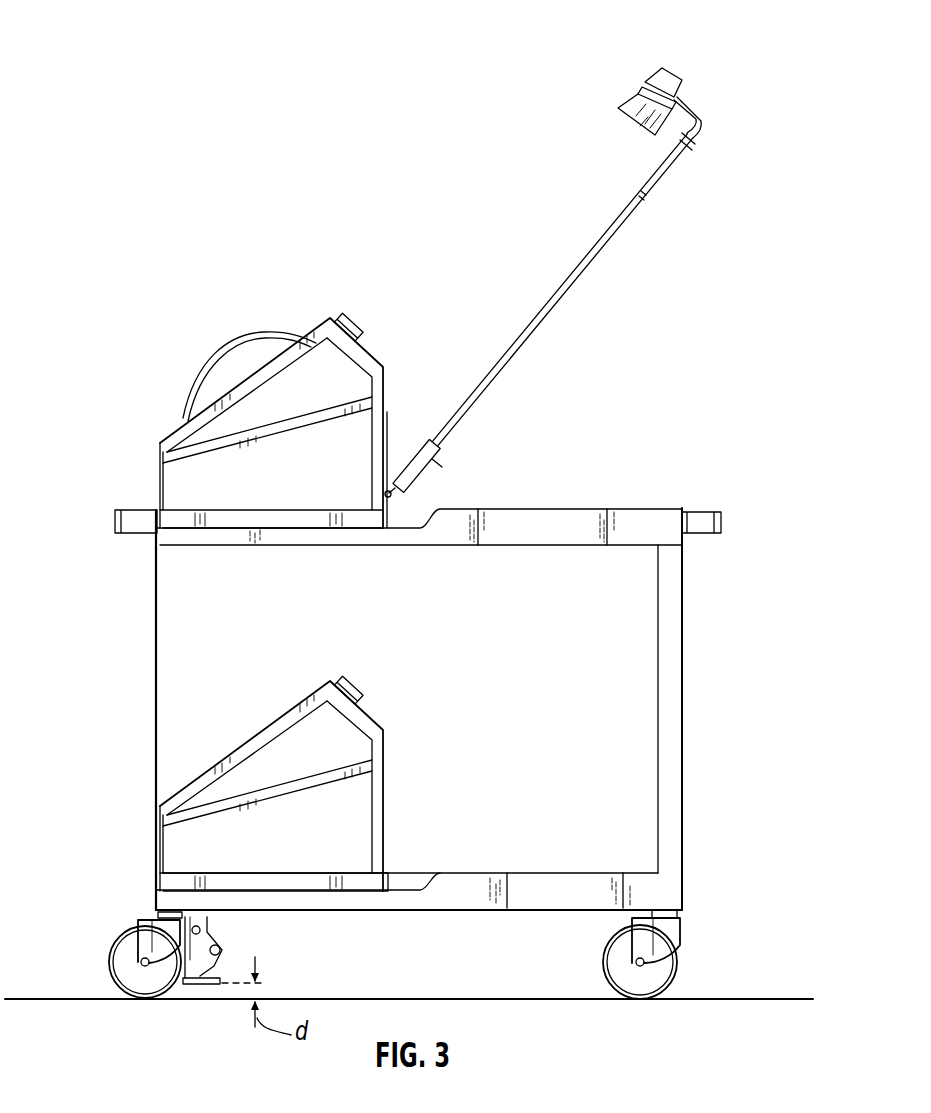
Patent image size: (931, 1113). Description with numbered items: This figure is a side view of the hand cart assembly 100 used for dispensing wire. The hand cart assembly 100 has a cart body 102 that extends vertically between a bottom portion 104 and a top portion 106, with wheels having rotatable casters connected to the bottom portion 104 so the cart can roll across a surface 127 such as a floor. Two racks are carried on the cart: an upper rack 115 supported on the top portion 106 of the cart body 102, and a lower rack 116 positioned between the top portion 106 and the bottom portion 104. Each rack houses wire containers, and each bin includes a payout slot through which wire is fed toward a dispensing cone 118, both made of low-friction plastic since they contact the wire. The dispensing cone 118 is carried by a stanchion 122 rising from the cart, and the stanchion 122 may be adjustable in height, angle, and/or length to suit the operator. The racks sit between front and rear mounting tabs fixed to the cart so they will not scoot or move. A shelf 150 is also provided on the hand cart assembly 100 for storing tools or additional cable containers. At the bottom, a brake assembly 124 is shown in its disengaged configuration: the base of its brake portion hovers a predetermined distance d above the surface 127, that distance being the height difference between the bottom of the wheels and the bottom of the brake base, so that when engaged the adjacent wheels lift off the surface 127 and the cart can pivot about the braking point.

The hand cart assembly 100 is at (172, 60).
The cart body 102 is at (683, 727).
The bottom portion 104 is at (437, 911).
The top portion 106 is at (652, 522).
The upper rack 115 is at (384, 400).
The lower rack 116 is at (386, 821).
The dispensing cone 118 is at (667, 68).
The stanchion 122 is at (549, 307).
The brake assembly 124 is at (231, 949).
The surface 127 is at (796, 998).
The shelf 150 is at (538, 502).